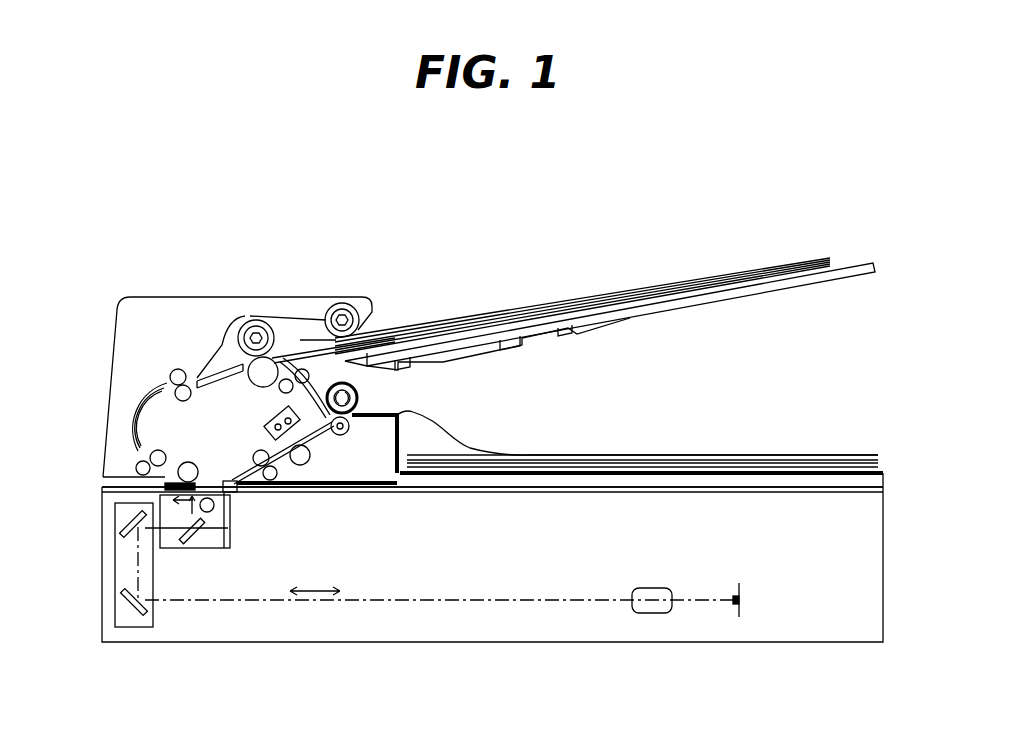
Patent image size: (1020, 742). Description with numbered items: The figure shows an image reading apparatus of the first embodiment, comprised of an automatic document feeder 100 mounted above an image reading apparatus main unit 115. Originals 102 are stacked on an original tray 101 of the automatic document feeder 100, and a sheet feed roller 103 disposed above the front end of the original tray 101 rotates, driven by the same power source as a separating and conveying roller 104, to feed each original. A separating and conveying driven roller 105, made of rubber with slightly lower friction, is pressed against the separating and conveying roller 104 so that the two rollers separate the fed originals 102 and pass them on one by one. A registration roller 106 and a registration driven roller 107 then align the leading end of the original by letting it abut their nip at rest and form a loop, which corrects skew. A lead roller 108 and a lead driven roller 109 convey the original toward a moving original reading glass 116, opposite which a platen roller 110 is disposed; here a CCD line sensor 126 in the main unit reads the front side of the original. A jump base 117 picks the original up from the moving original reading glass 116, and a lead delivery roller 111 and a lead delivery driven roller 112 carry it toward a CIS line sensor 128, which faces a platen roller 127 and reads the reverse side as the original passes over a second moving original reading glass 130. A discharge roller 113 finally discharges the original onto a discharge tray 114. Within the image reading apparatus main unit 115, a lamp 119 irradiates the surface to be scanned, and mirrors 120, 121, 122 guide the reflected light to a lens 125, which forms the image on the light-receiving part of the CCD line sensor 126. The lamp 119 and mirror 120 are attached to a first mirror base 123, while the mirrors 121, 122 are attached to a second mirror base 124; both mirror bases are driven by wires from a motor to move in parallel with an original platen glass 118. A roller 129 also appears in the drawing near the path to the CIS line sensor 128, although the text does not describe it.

The automatic document feeder 100 is at (458, 173).
The original tray 101 is at (780, 285).
The originals 102 is at (653, 288).
The sheet feed roller 103 is at (346, 303).
The separating and conveying roller 104 is at (255, 320).
The separating and conveying driven roller 105 is at (266, 357).
The registration roller 106 is at (191, 388).
The registration driven roller 107 is at (178, 368).
The lead roller 108 is at (150, 458).
The lead driven roller 109 is at (137, 470).
The platen roller 110 is at (180, 437).
The lead delivery roller 111 is at (254, 455).
The lead delivery driven roller 112 is at (277, 473).
The discharge roller 113 is at (400, 415).
The discharge tray 114 is at (873, 468).
The image reading apparatus main unit 115 is at (807, 630).
The moving original reading glass 116 is at (165, 489).
The jump base 117 is at (237, 490).
The original platen glass 118 is at (590, 487).
The lamp 119 is at (230, 545).
The mirror 120 is at (198, 545).
The mirror 121 is at (123, 530).
The mirror 122 is at (127, 603).
The first mirror base 123 is at (232, 520).
The second mirror base 124 is at (132, 617).
The lens 125 is at (655, 587).
The CCD line sensor 126 is at (745, 580).
The platen roller 127 is at (398, 486).
The CIS line sensor 128 is at (260, 420).
The registration roller 129 is at (356, 385).
The moving original reading glass 130 is at (349, 435).